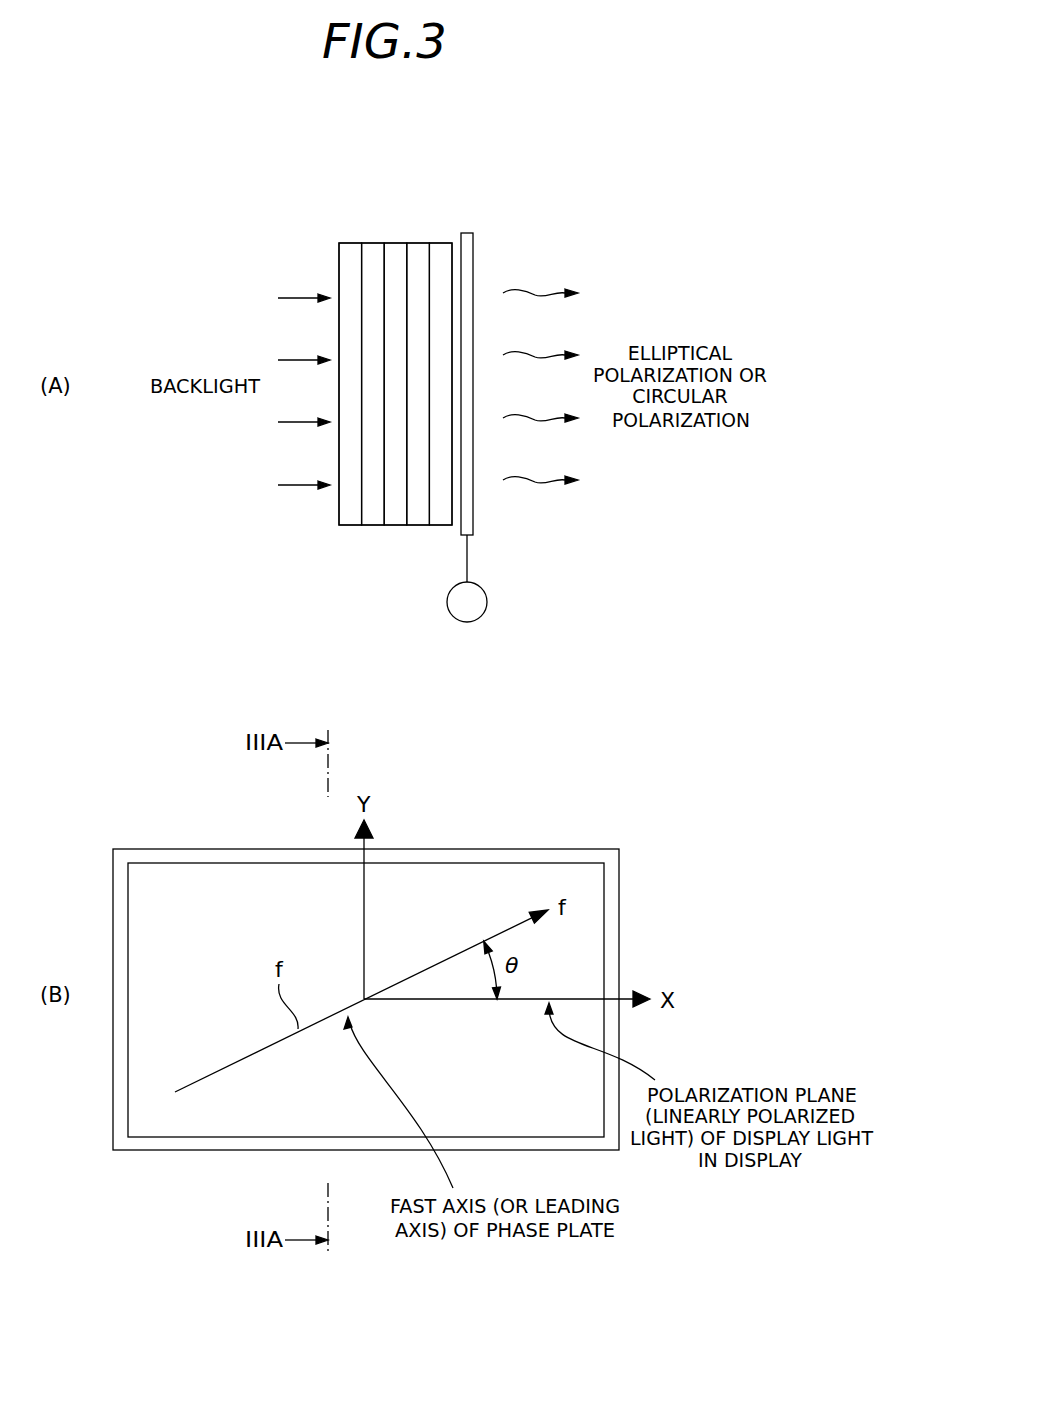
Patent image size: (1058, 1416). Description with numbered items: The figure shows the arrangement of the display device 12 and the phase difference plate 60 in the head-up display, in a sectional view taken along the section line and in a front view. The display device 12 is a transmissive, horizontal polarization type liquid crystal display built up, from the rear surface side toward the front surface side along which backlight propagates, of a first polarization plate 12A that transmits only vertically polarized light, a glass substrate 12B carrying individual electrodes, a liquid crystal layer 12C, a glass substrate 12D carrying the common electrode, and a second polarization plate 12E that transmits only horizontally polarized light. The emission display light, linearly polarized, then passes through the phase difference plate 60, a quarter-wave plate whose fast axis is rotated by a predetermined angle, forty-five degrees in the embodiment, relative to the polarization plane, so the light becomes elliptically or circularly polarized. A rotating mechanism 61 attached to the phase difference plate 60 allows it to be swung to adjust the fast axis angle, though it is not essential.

The display device 12 is at (439, 347).
The first polarization plate 12A is at (349, 252).
The glass substrate (individual electrodes) 12B is at (372, 518).
The liquid crystal layer 12C is at (396, 252).
The glass substrate (common electrode) 12D is at (418, 518).
The second polarization plate 12E is at (441, 252).
The phase difference plate 60 is at (468, 258).
The rotating mechanism 61 is at (486, 598).